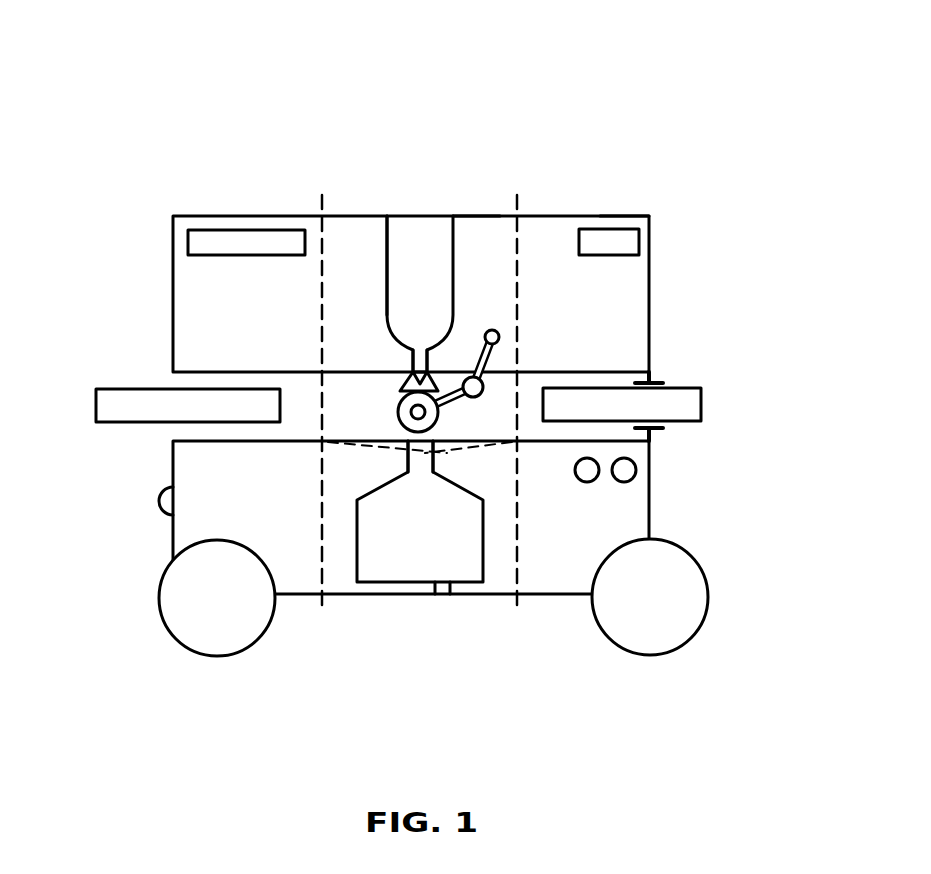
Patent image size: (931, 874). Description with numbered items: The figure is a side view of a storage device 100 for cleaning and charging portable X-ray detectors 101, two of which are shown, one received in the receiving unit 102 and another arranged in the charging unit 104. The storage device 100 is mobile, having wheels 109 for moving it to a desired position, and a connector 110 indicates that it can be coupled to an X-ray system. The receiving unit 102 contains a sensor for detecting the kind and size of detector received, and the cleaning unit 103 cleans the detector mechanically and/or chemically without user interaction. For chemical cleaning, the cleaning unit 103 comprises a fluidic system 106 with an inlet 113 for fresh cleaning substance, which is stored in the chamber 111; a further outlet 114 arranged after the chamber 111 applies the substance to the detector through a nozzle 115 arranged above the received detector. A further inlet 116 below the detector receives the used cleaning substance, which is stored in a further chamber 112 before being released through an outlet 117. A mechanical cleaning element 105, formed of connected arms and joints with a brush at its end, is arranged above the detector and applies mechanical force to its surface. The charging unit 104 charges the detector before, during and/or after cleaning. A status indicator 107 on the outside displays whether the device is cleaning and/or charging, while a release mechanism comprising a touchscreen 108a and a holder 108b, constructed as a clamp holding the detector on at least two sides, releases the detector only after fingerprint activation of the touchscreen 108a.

The storage device 100 is at (618, 93).
The portable X-ray detector 101 is at (115, 411).
The receiving unit 102 is at (244, 215).
The cleaning unit 103 is at (470, 216).
The charging unit 104 is at (630, 217).
The mechanical cleaning element 105 is at (505, 358).
The fluidic system 106 is at (387, 262).
The status indicator 107 is at (202, 244).
The touchscreen 108a is at (639, 243).
The holder 108b is at (649, 378).
The wheels 109 is at (185, 618).
The connector 110 is at (160, 502).
The chamber 111 is at (429, 239).
The further chamber 112 is at (405, 567).
The inlet 113 is at (395, 216).
The further outlet 114 is at (413, 355).
The nozzle 115 is at (424, 385).
The further inlet 116 is at (427, 448).
The outlet 117 is at (443, 594).